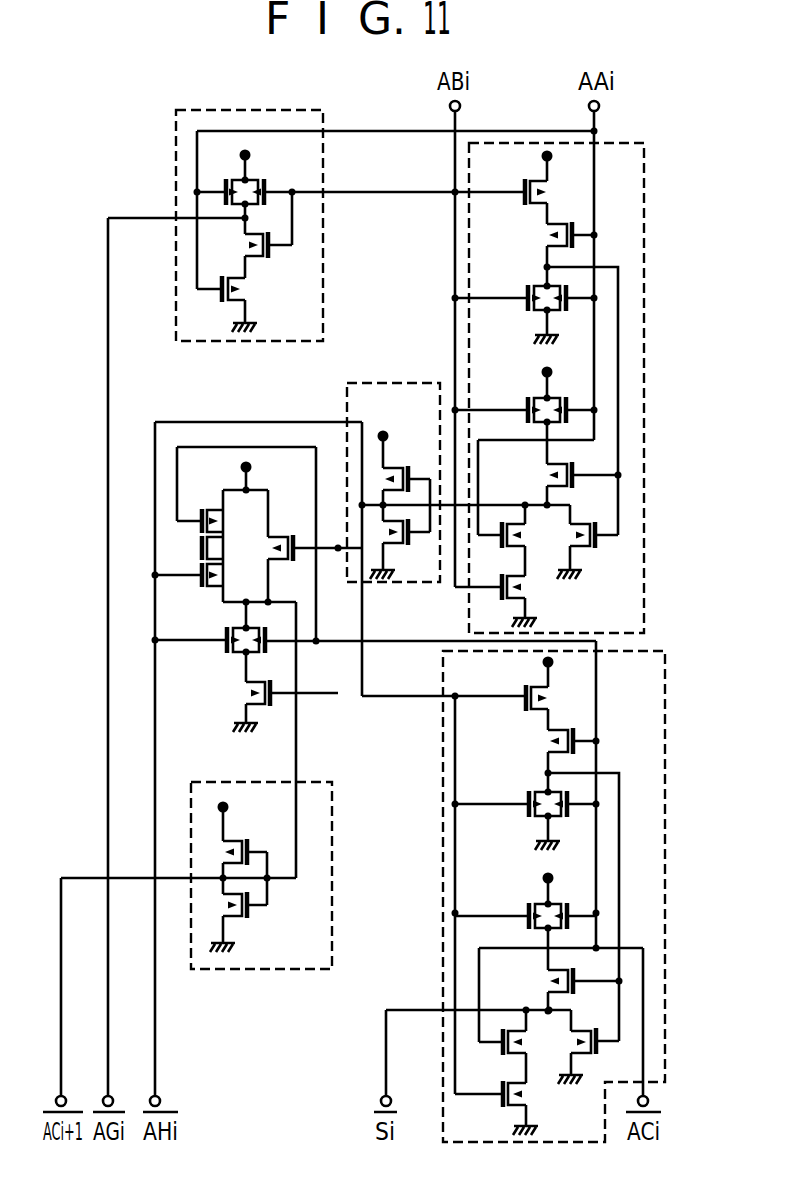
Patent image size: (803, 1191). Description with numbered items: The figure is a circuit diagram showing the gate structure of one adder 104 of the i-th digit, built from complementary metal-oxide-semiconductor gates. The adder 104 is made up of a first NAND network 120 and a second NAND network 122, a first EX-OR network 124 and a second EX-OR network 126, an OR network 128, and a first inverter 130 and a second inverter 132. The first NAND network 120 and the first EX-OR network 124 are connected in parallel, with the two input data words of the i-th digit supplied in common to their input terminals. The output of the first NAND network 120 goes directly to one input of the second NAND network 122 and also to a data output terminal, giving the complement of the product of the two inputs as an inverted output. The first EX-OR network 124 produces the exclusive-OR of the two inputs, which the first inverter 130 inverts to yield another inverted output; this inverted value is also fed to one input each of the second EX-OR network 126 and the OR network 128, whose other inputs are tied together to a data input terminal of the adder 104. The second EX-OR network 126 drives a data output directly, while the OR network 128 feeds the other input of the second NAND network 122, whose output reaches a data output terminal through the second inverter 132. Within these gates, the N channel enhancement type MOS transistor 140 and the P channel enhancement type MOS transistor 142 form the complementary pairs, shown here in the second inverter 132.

The adder 104 is at (134, 205).
The first NAND network 120 is at (323, 206).
The second NAND network 122 is at (255, 693).
The first EX-OR network 124 is at (645, 355).
The second EX-OR network 126 is at (666, 850).
The OR network 128 is at (194, 548).
The first inverter 130 is at (398, 383).
The second inverter 132 is at (303, 969).
The N channel enhancement type MOS transistor 140 is at (254, 912).
The P channel enhancement type MOS transistor 142 is at (250, 840).